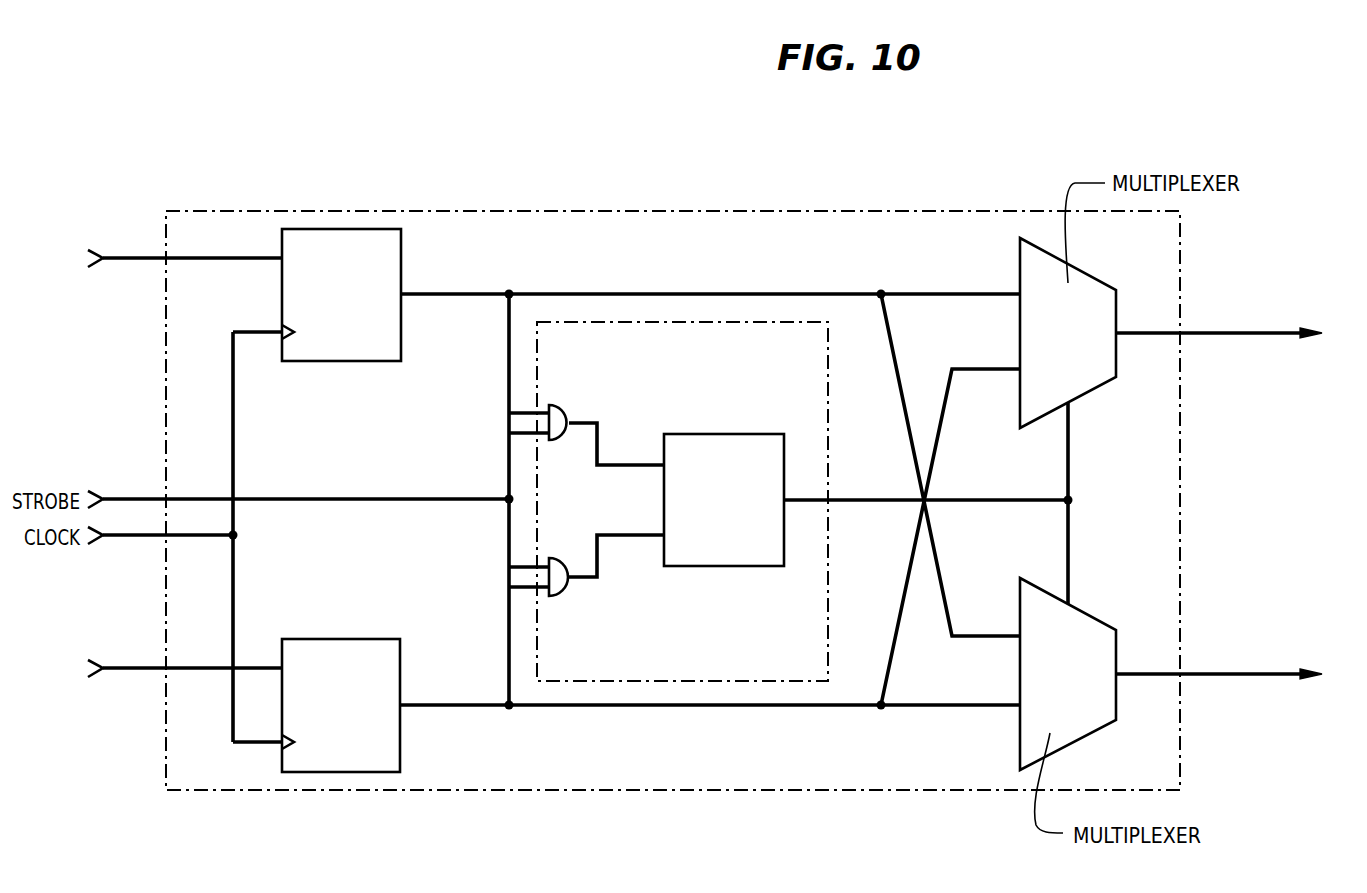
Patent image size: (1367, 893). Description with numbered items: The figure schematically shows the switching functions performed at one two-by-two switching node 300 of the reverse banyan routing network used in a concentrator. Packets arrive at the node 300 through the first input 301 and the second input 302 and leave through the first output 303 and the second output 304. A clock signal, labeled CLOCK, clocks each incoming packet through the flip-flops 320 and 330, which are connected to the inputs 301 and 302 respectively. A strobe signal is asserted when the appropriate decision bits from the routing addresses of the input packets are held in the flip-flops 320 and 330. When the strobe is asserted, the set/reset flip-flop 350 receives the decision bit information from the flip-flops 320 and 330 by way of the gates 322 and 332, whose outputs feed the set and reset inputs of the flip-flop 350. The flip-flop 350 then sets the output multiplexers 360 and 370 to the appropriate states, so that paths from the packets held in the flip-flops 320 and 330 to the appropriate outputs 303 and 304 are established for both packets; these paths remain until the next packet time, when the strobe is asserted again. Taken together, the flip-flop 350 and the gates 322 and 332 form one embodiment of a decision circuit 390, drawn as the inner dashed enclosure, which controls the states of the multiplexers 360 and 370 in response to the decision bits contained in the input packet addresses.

The switching node 300 is at (530, 210).
The first input 301 is at (159, 262).
The second input 302 is at (159, 671).
The first output 303 is at (1241, 314).
The second output 304 is at (1241, 698).
The flip-flop 320 is at (401, 261).
The gate 322 is at (557, 405).
The flip-flop 330 is at (400, 746).
The gate 332 is at (557, 596).
The set/reset flip-flop 350 is at (688, 434).
The output multiplexer 360 is at (1095, 388).
The output multiplexer 370 is at (1105, 622).
The decision circuit 390 is at (713, 322).